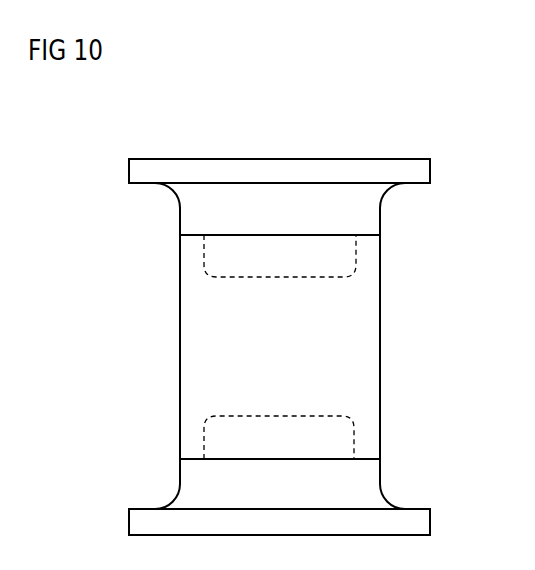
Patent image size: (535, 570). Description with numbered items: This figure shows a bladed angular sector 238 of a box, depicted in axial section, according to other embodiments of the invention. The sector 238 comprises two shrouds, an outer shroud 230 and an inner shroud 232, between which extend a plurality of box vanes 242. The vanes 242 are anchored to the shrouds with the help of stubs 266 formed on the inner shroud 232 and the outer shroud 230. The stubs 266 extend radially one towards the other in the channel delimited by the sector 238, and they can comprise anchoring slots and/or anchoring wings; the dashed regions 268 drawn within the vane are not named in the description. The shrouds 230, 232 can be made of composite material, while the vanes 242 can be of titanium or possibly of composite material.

The bladed angular sector 238 is at (443, 121).
The outer shroud 230 is at (369, 171).
The inner shroud 232 is at (420, 522).
The box vanes 242 is at (352, 331).
The stubs 266 is at (198, 210).
The recess 268 is at (265, 266).